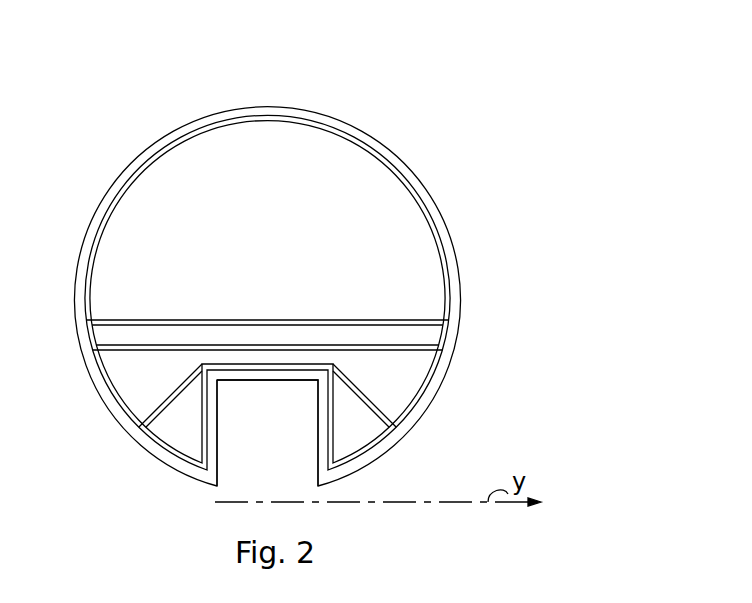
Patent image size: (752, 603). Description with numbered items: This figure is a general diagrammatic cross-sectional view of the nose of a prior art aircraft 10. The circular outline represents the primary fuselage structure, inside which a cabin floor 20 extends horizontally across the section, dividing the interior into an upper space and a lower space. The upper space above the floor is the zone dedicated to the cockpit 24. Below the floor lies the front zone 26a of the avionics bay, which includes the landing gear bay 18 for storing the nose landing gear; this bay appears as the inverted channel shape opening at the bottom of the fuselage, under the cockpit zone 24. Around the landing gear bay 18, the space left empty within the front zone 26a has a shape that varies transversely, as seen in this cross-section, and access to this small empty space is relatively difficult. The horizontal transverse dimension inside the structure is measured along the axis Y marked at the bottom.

The aircraft 10 is at (423, 160).
The landing gear bay 18 is at (337, 435).
The cabin floor 20 is at (372, 338).
The cockpit zone 24 is at (385, 262).
The front zone 26a is at (392, 375).